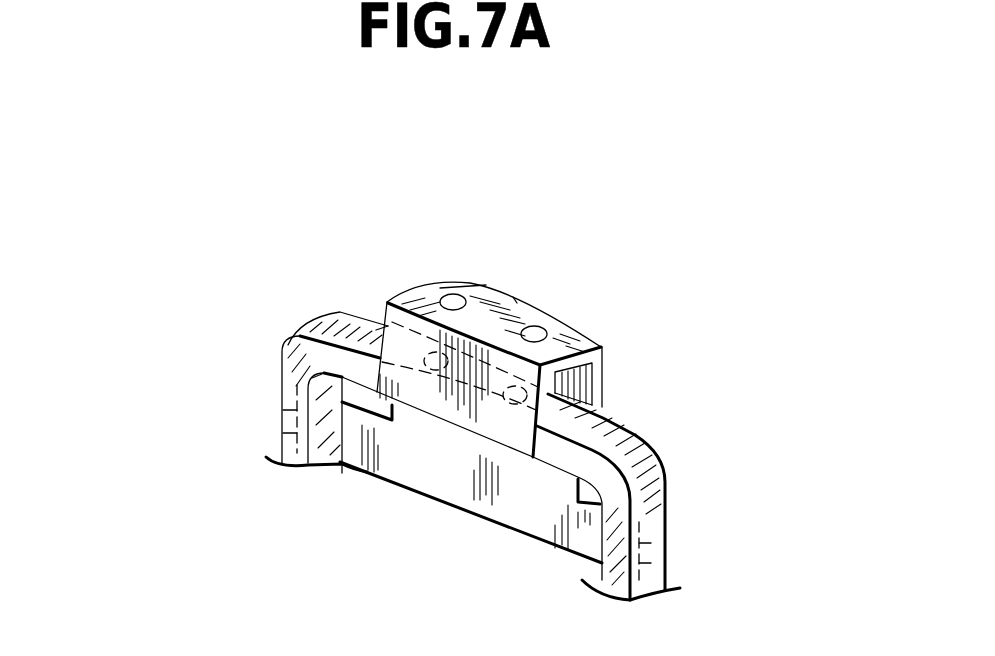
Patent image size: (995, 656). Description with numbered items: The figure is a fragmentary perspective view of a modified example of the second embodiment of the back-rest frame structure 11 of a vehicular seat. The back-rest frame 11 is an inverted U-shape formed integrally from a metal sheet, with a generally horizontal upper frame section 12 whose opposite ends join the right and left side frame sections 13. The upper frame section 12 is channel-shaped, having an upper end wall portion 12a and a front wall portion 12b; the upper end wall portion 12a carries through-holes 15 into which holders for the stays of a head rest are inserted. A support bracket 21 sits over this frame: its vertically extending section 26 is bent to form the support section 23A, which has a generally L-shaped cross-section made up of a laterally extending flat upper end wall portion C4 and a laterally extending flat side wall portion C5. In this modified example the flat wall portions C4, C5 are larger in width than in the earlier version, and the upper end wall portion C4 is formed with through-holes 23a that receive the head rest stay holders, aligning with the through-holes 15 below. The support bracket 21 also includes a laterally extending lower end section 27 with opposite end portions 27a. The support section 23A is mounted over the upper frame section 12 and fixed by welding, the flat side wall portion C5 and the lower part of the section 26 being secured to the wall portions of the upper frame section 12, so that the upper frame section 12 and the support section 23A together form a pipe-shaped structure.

The back-rest frame 11 is at (286, 330).
The upper frame section 12 is at (608, 417).
The upper end wall portion 12a is at (650, 446).
The front wall portion 12b is at (563, 455).
The side frame section 13 is at (297, 437).
The through-hole 15 is at (515, 405).
The support bracket 21 is at (496, 300).
The support section 23A is at (523, 307).
The through-hole 23a is at (445, 286).
The vertically extending section 26 is at (603, 375).
The lower end section 27 is at (460, 490).
The end portion 27a is at (297, 413).
The upper end wall portion C4 is at (470, 300).
The side wall portion C5 is at (380, 323).